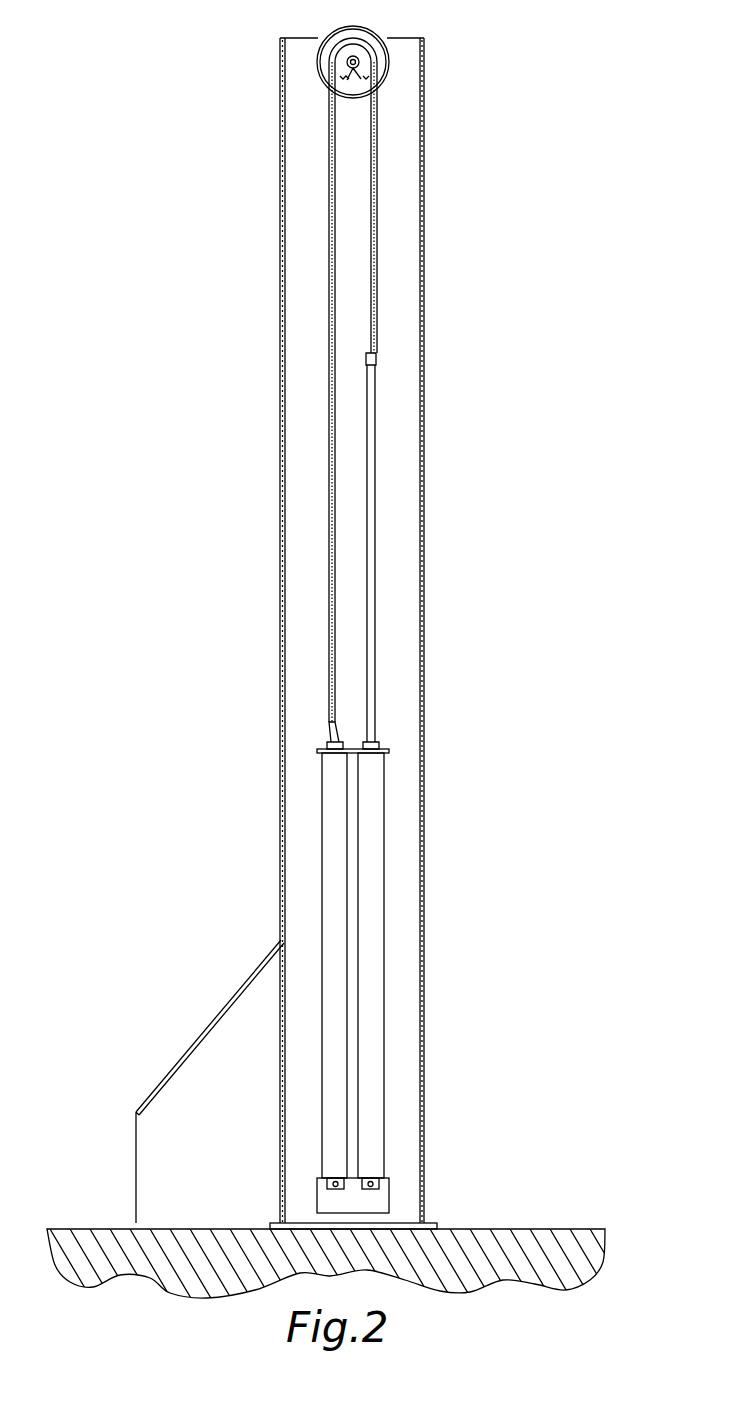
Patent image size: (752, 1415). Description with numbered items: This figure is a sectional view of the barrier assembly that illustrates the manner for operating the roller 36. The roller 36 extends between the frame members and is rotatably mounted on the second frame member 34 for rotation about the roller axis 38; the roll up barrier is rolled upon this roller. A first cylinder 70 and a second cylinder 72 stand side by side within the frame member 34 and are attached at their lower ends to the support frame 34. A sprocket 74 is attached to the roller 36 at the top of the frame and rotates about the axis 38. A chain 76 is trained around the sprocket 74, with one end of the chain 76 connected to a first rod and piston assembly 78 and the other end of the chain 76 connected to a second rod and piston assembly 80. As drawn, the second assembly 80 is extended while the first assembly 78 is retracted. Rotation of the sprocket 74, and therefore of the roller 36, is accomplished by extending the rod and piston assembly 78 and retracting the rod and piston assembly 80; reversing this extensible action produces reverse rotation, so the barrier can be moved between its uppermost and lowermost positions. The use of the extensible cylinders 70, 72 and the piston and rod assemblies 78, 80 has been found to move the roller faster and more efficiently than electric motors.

The second frame member 34 is at (281, 279).
The roller 36 is at (326, 33).
The roller axis 38 is at (333, 93).
The first cylinder 70 is at (321, 846).
The second cylinder 72 is at (385, 846).
The sprocket 74 is at (372, 96).
The chain 76 is at (333, 465).
The first rod and piston assembly 78 is at (331, 727).
The second rod and piston assembly 80 is at (374, 389).